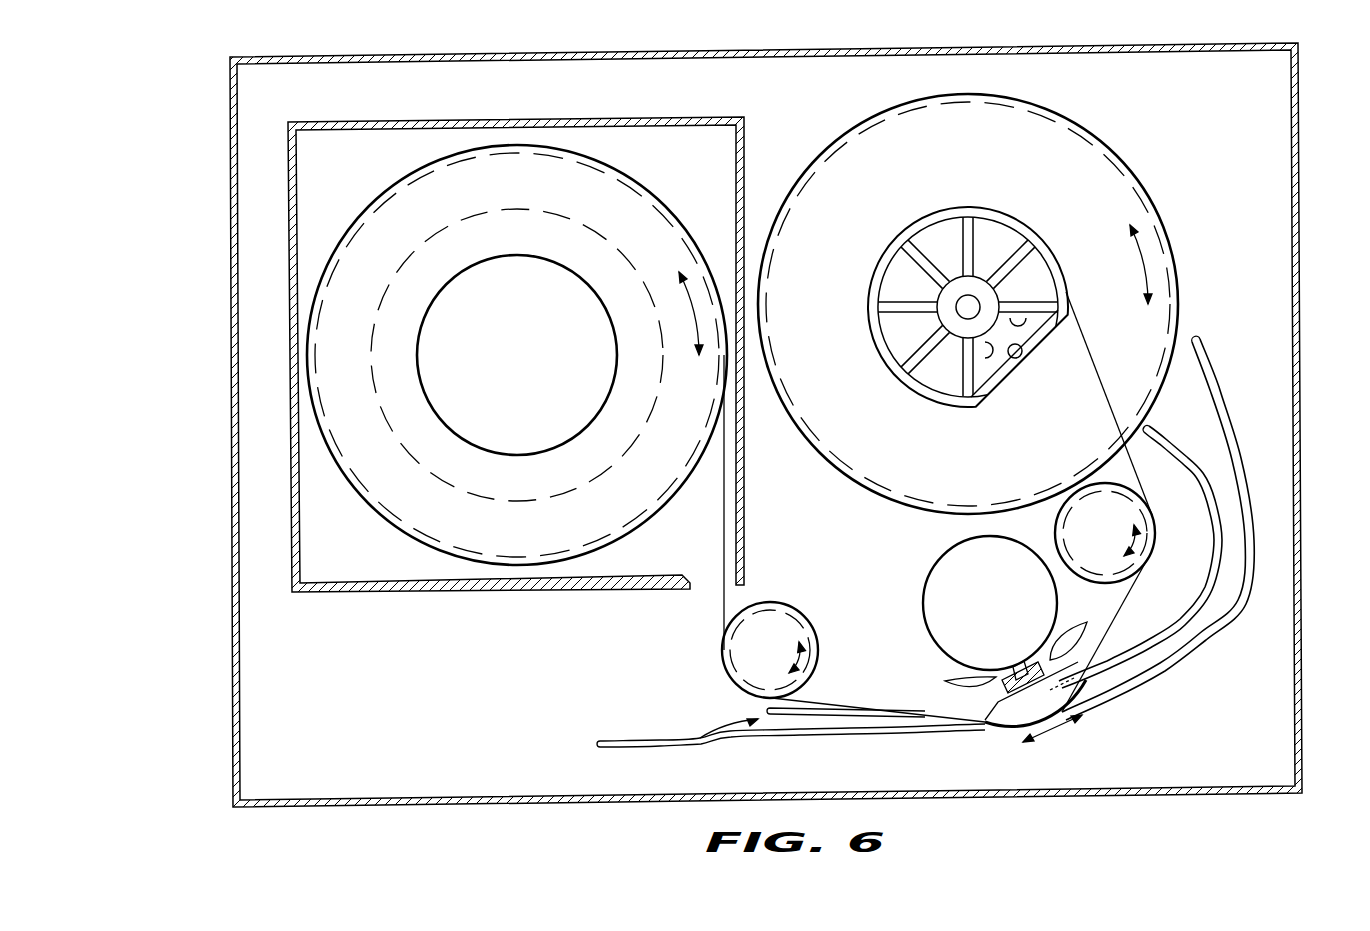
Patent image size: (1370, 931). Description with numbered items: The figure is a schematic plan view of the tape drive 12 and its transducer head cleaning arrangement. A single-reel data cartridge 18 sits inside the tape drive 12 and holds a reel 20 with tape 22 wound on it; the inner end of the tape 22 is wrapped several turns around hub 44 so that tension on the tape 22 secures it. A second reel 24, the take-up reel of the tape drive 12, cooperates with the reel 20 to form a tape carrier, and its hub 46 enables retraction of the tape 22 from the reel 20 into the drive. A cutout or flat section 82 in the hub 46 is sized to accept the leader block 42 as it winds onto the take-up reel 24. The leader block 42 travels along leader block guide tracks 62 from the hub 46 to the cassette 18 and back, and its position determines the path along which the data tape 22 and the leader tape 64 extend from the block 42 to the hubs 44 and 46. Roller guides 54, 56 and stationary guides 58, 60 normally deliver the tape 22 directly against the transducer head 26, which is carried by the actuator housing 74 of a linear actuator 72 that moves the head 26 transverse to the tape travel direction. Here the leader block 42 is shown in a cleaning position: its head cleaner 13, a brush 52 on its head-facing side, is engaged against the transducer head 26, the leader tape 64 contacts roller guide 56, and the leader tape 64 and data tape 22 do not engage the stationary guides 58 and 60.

The tape drive 12 is at (1297, 138).
The data cartridge 18 is at (484, 611).
The reel 20 is at (393, 527).
The hub 44 is at (508, 250).
The tape 22 is at (722, 596).
The second reel 24 is at (868, 122).
The hub 46 is at (997, 205).
The flat section 82 is at (995, 405).
The leader tape 64 is at (1103, 400).
The roller guide 56 is at (1157, 510).
The roller guide 54 is at (726, 672).
The linear actuator 72 is at (927, 545).
The actuator housing 74 is at (923, 598).
The leader block 42 is at (998, 730).
The transducer head 26 is at (1018, 672).
The transducer head cleaner 13 is at (1037, 662).
The brush 52 is at (1108, 665).
The stationary guide 58 is at (960, 678).
The stationary guide 60 is at (1085, 640).
The leader block guide tracks 62 is at (710, 745).